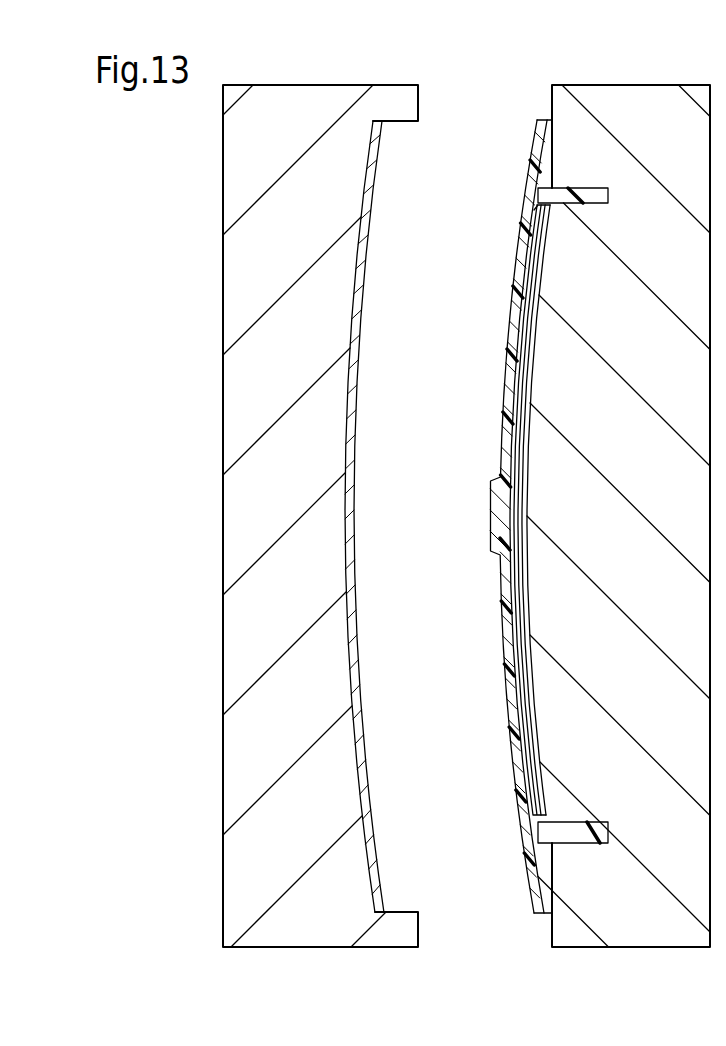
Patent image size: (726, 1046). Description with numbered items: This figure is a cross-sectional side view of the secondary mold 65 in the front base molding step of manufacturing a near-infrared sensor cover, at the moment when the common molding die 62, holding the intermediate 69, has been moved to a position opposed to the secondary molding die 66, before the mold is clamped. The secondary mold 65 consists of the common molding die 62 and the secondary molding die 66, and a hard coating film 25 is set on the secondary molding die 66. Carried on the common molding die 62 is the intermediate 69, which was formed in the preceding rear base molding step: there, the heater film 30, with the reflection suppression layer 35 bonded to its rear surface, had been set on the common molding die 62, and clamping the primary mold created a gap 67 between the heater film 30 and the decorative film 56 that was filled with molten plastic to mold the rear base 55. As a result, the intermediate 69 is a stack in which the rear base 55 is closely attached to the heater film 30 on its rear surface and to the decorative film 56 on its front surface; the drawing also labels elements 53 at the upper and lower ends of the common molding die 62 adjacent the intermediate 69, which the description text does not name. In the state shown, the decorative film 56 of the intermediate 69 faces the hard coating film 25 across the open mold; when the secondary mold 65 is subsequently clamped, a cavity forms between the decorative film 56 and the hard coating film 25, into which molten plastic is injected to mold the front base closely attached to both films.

The hard coating film 25 is at (357, 418).
The heater film 30 is at (530, 303).
The reflection suppression layer 35 is at (532, 388).
The fixing member 53 is at (600, 196).
The rear base 55 is at (517, 263).
The decorative film 56 is at (508, 353).
The common molding die 62 is at (560, 105).
The secondary mold 65 is at (520, 142).
The secondary molding die 66 is at (407, 101).
The gap (cavity) 67 is at (545, 212).
The intermediate 69 is at (522, 516).